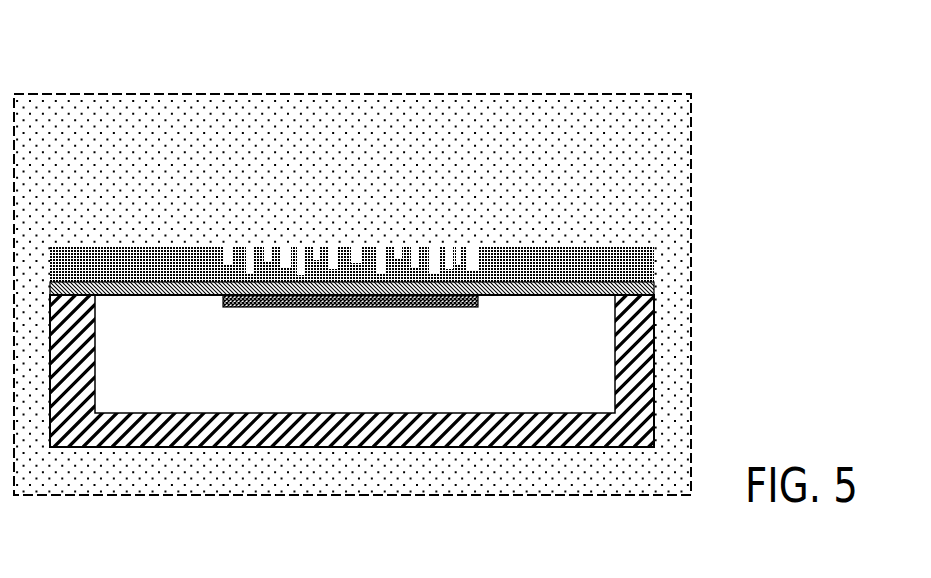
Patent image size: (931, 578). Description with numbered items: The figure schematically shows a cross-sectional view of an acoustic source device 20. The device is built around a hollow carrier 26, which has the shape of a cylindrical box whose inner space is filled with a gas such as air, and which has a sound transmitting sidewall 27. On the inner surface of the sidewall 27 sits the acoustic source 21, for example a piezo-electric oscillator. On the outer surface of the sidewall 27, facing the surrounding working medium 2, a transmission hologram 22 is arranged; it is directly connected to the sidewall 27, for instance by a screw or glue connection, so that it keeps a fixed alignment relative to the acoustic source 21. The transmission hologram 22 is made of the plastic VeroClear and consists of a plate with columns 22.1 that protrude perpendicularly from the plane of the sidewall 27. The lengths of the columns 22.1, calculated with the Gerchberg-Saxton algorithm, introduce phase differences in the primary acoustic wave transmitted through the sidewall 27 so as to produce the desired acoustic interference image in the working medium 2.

The working medium 2 is at (178, 120).
The acoustic source device 20 is at (400, 341).
The acoustic source 21 is at (275, 308).
The transmission hologram 22 is at (352, 211).
The columns 22.1 is at (290, 250).
The hollow carrier 26 is at (220, 398).
The sound transmitting sidewall 27 is at (195, 285).